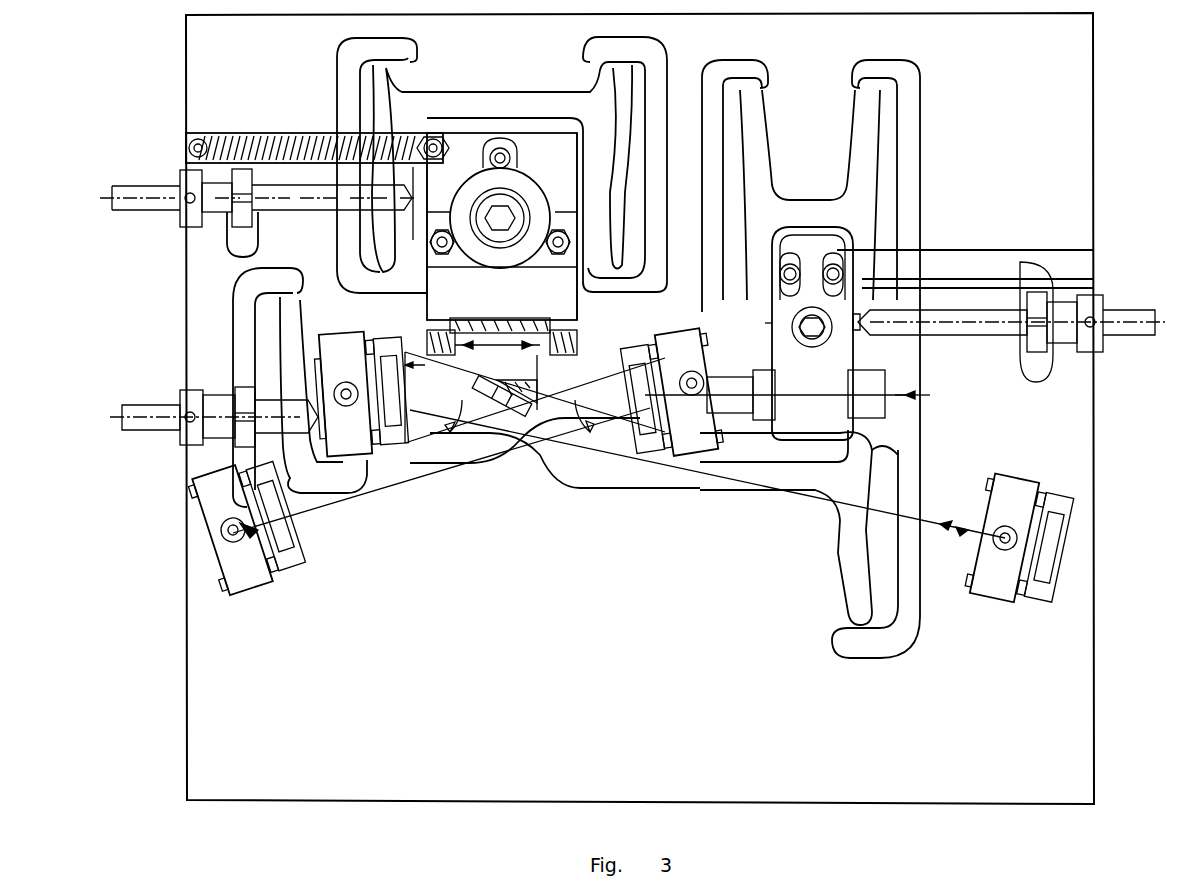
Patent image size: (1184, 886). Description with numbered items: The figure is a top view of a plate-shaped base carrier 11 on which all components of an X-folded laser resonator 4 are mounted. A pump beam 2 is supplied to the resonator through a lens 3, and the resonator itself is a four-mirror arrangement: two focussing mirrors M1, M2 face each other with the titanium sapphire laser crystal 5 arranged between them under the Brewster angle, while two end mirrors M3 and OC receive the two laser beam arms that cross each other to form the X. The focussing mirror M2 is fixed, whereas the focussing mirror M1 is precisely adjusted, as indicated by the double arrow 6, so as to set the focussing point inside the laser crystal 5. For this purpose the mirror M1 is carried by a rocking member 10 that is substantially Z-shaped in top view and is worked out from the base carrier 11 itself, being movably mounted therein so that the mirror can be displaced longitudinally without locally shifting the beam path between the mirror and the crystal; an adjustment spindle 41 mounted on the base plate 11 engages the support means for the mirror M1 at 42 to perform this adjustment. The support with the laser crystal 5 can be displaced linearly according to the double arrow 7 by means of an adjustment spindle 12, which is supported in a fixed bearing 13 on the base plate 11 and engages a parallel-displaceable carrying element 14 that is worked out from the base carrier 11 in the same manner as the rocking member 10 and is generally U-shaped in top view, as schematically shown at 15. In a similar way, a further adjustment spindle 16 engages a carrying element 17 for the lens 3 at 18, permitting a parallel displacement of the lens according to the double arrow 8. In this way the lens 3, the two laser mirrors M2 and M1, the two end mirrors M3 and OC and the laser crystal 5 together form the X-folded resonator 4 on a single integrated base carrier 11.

The pump beam 2 is at (905, 382).
The lens 3 is at (700, 410).
The X-folded laser resonator 4 is at (628, 567).
The Ti:S laser crystal 5 is at (510, 400).
The double arrow 6 is at (400, 362).
The double arrow 7 is at (507, 333).
The double arrow 8 is at (840, 358).
The rocking member 10 is at (582, 452).
The base carrier 11 is at (416, 731).
The adjustment spindle 12 is at (313, 210).
The fixed bearing 13 is at (205, 245).
The carrying element 14 is at (587, 248).
The U-shaped configuration 15 is at (414, 231).
The adjustment spindle 16 is at (953, 315).
The carrying element 17 is at (767, 323).
The engagement point 18 is at (862, 313).
The adjustment spindle 41 is at (132, 408).
The engagement point 42 is at (317, 413).
The focussing mirror M1 is at (394, 395).
The focussing mirror M2 is at (641, 378).
The end mirror M3 is at (1038, 565).
The end mirror OC is at (280, 530).